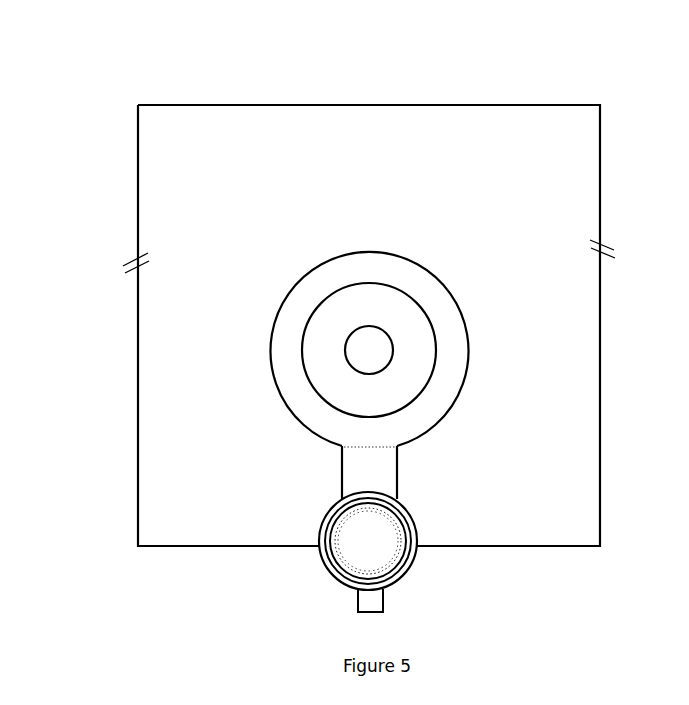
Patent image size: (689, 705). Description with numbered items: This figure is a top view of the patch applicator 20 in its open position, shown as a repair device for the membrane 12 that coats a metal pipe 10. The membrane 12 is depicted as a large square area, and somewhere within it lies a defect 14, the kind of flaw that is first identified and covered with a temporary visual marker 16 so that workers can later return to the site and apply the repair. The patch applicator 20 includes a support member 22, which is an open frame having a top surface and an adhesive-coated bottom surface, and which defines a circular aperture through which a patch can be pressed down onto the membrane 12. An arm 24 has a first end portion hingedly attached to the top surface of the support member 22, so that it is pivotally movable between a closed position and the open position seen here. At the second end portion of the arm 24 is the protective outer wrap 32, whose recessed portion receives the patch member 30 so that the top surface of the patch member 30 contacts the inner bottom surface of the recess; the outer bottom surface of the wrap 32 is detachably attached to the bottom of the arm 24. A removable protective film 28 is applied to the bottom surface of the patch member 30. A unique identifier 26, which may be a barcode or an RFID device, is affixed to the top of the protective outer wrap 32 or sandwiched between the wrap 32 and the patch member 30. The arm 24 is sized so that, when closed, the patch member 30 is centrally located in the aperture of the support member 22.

The pipe 10 is at (503, 104).
The membrane 12 is at (330, 157).
The defect 14 is at (367, 352).
The temporary visual marker 16 is at (377, 328).
The patch applicator 20 is at (382, 431).
The support member 22 is at (332, 283).
The arm 24 is at (365, 468).
The unique identifier 26 is at (378, 533).
The removable protective film 28 is at (367, 602).
The patch member 30 is at (395, 561).
The protective outer wrap 32 is at (327, 568).